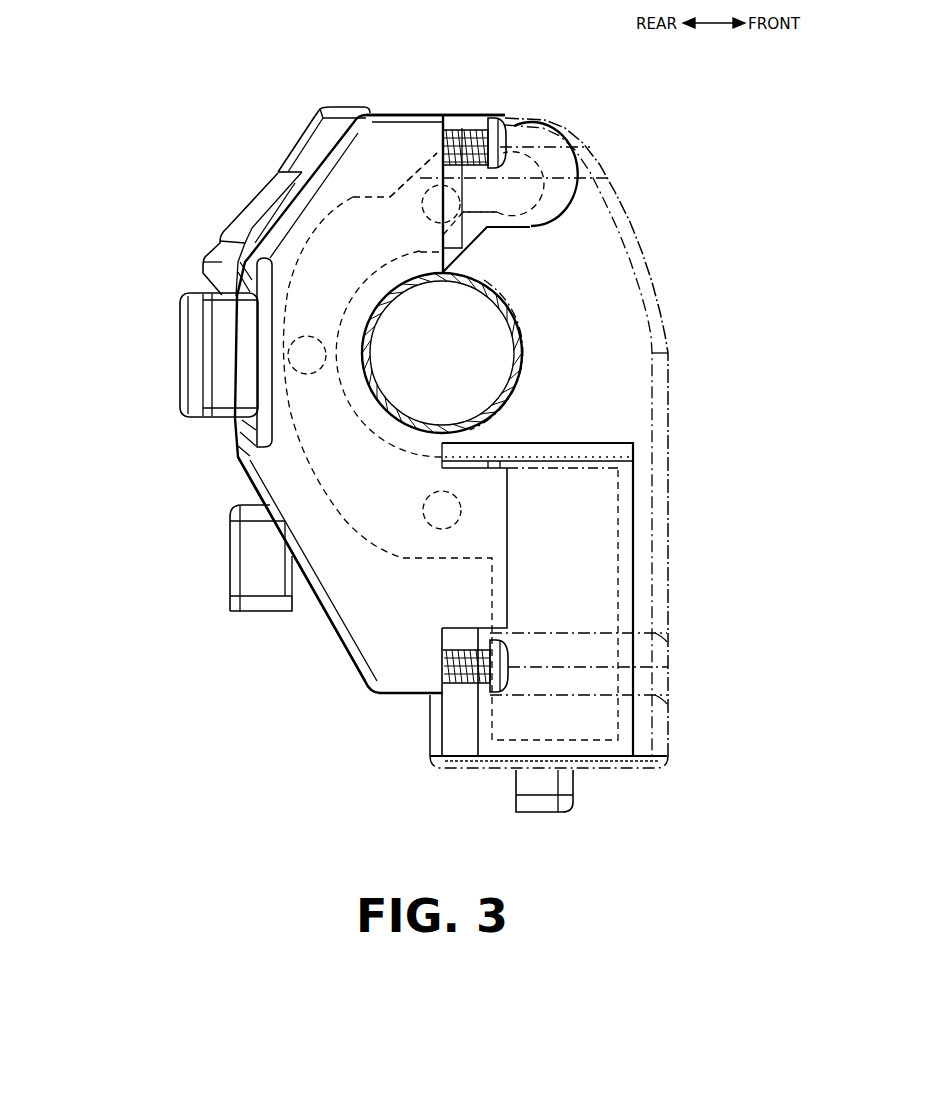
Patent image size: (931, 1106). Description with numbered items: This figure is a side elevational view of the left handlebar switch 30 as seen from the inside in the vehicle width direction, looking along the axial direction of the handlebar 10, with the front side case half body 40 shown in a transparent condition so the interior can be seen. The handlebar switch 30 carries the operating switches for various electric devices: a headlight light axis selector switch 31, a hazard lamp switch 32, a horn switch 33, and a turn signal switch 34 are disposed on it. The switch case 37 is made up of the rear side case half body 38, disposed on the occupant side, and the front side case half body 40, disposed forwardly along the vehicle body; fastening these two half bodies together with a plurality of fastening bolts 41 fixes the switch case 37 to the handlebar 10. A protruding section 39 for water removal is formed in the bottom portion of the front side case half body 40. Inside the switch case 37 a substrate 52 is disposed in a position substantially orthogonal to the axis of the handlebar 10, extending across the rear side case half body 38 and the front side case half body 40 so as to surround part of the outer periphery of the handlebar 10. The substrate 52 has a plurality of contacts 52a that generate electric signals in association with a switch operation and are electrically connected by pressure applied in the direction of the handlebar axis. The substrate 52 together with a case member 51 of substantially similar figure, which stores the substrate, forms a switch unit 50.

The handlebar 10 is at (470, 274).
The left handlebar switch 30 is at (247, 58).
The headlight light axis selector switch 31 is at (313, 146).
The hazard lamp switch 32 is at (247, 218).
The horn switch 33 is at (193, 357).
The turn signal switch 34 is at (250, 563).
The switch case 37 is at (395, 114).
The rear side case half body 38 is at (350, 612).
The protruding section 39 is at (535, 806).
The front side case half body 40 is at (563, 126).
The fastening bolt 41 is at (504, 133).
The switch unit 50 is at (565, 203).
The case member 51 is at (533, 221).
The substrate 52 is at (427, 157).
The contact 52a is at (425, 197).